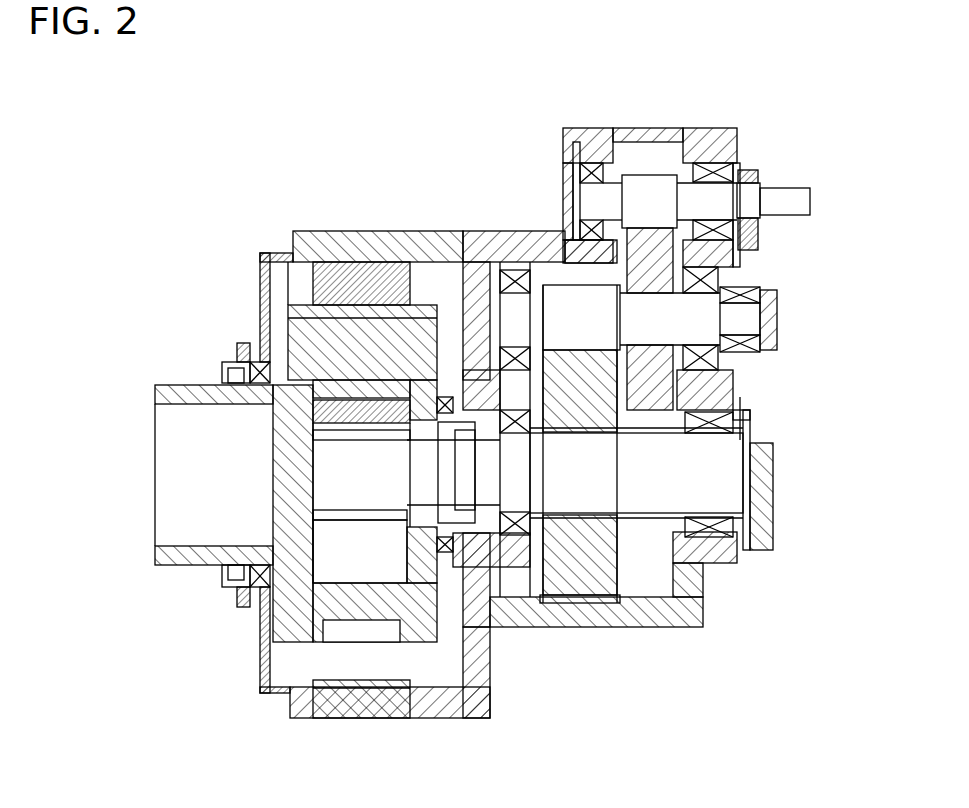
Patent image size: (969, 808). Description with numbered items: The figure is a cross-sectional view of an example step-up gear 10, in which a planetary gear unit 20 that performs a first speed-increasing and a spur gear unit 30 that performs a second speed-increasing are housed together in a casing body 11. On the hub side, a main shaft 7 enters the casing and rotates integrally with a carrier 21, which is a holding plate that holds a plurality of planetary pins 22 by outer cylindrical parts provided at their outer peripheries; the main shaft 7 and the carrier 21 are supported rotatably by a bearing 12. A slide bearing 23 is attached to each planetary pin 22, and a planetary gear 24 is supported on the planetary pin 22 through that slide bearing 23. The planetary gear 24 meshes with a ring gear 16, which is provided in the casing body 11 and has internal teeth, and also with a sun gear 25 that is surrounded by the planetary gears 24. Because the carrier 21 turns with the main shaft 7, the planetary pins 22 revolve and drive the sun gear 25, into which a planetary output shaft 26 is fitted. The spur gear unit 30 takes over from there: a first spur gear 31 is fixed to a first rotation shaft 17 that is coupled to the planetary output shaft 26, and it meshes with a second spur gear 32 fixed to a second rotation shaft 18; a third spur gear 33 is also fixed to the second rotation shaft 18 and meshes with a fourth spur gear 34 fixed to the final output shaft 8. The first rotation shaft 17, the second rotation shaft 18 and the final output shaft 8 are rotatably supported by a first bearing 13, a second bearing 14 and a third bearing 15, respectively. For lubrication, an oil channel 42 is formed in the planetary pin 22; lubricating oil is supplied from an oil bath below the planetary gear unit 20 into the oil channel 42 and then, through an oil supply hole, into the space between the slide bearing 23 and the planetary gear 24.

The main shaft 7 is at (190, 568).
The final output shaft 8 is at (795, 190).
The step-up gear 10 is at (256, 99).
The casing body 11 is at (470, 718).
The bearing 12 is at (222, 367).
The first bearing 13 is at (510, 540).
The second bearing 14 is at (497, 262).
The third bearing 15 is at (585, 160).
The ring gear 16 is at (358, 231).
The first rotation shaft 17 is at (742, 468).
The second rotation shaft 18 is at (560, 310).
The planetary gear unit 20 is at (288, 658).
The carrier 21 is at (272, 300).
The planetary pin 22 is at (290, 335).
The slide bearing 23 is at (300, 295).
The planetary gear 24 is at (312, 262).
The sun gear 25 is at (352, 520).
The planetary output shaft 26 is at (372, 510).
The spur gear unit 30 is at (650, 598).
The first spur gear 31 is at (592, 604).
The second spur gear 32 is at (530, 262).
The third spur gear 33 is at (735, 385).
The fourth spur gear 34 is at (652, 175).
The oil channel 42 is at (397, 337).